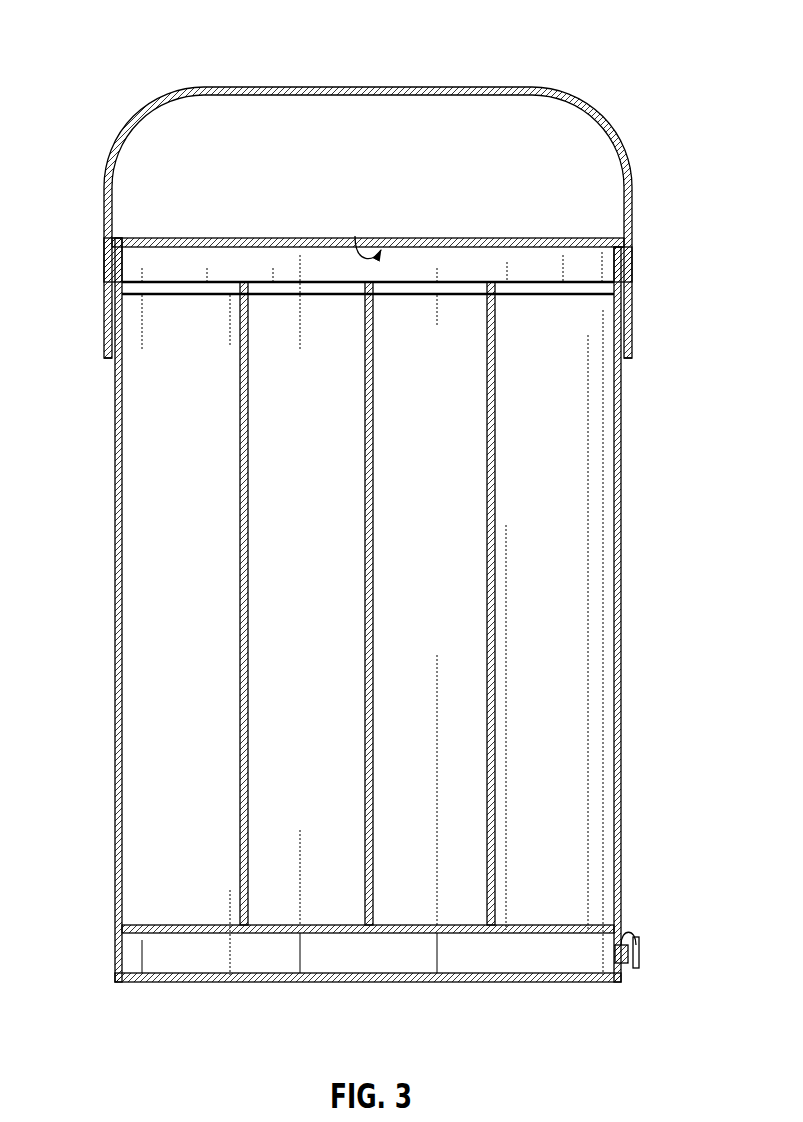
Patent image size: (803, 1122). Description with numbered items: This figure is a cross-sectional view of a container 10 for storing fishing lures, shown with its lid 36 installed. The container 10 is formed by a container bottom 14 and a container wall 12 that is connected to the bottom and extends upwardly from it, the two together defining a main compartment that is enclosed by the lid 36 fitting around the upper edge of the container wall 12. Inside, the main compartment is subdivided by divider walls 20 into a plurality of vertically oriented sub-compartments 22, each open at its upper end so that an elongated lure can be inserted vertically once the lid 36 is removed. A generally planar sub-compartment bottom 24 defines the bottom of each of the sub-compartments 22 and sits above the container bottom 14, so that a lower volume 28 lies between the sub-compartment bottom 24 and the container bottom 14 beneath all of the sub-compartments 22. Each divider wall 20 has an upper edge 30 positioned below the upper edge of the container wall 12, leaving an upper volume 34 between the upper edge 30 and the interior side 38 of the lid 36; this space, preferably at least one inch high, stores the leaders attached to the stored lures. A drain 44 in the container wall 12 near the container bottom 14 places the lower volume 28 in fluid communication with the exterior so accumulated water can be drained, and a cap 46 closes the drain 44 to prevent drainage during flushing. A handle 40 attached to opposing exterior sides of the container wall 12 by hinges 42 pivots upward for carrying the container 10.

The container 10 is at (122, 28).
The container wall 12 is at (115, 770).
The container bottom 14 is at (210, 982).
The divider walls 20 is at (365, 762).
The sub-compartments 22 is at (292, 500).
The sub-compartment bottom 24 is at (478, 933).
The lower volume 28 is at (140, 953).
The upper edge of divider wall 30 is at (530, 278).
The upper volume 34 is at (142, 262).
The lid 36 is at (222, 238).
The interior side of lid 38 is at (355, 238).
The handle 40 is at (580, 105).
The hinges 42 is at (103, 355).
The drain 44 is at (625, 964).
The cap 46 is at (640, 953).